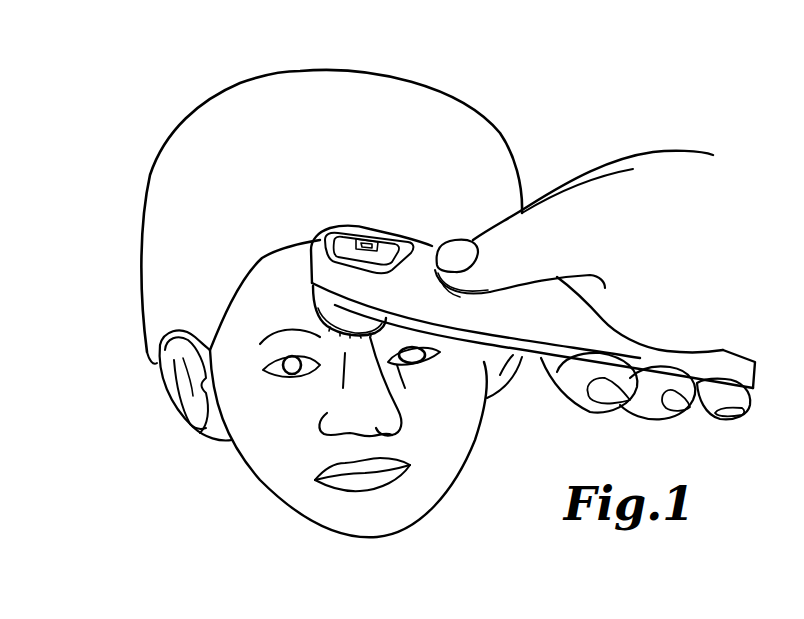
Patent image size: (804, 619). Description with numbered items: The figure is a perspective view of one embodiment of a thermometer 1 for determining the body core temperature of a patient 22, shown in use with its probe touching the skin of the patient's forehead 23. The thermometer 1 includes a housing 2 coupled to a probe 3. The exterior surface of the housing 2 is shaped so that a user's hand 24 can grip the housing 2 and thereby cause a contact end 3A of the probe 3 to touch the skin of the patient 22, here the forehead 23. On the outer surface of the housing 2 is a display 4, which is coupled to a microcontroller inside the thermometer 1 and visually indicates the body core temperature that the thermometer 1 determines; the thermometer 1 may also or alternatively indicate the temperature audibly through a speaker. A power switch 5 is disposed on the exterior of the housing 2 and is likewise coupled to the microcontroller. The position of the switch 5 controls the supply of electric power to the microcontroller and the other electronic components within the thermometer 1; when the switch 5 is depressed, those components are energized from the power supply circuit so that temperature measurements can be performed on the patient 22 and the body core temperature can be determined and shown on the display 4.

The thermometer 1 is at (175, 86).
The housing 2 is at (540, 322).
The probe 3 is at (322, 253).
The contact end 3A is at (322, 328).
The display 4 is at (382, 238).
The power switch 5 is at (455, 288).
The patient 22 is at (250, 440).
The forehead 23 is at (297, 288).
The hand 24 is at (677, 175).